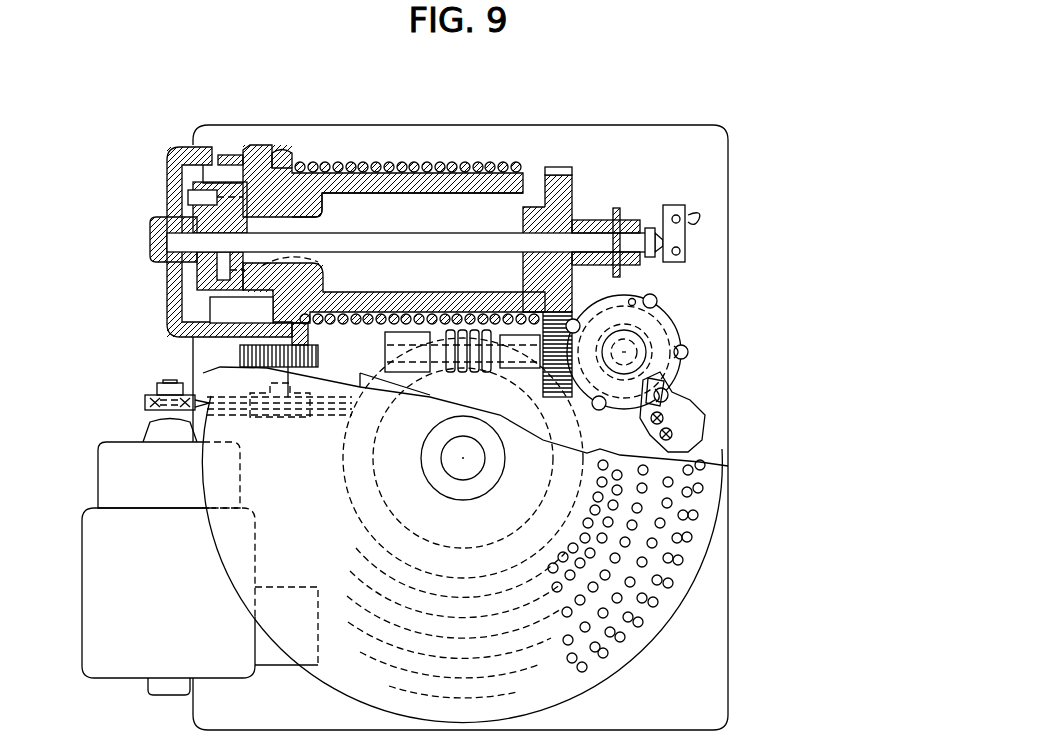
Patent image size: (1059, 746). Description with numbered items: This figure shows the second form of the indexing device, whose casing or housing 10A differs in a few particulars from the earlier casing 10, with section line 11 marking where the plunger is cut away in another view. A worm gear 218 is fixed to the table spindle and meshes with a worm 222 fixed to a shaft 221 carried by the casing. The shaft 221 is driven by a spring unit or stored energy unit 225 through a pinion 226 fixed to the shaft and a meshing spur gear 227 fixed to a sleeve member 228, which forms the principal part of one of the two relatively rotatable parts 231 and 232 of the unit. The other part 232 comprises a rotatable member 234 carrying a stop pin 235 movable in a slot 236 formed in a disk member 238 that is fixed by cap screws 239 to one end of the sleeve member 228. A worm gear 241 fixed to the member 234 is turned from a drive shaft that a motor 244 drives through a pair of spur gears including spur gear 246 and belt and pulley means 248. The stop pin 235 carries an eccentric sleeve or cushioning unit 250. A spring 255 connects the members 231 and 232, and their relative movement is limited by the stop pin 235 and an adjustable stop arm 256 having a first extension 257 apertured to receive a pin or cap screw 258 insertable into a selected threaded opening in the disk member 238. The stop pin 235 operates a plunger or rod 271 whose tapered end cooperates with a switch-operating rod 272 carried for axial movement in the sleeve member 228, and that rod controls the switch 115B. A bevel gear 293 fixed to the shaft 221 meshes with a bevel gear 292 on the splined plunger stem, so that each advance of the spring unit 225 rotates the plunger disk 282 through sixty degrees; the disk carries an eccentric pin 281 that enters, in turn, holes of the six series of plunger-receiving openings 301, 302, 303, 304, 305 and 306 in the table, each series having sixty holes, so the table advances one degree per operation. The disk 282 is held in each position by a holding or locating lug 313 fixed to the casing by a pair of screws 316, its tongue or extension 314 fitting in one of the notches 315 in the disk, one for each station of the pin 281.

The casing or housing 10 is at (96, 110).
The casing or housing 10A is at (516, 124).
The section line 11- 11 is at (630, 98).
The switch 115B is at (677, 206).
The worm gear 218 is at (443, 388).
The shaft 221 is at (398, 337).
The worm 222 is at (461, 331).
The spring unit or stored energy unit 225 is at (384, 162).
The pinion 226 is at (553, 394).
The spur gear 227 is at (562, 167).
The sleeve member 228 is at (428, 196).
The relatively rotatable part 231 is at (582, 181).
The relatively rotatable part 232 is at (251, 145).
The rotatable member 234 is at (196, 148).
The stop pin 235 is at (222, 313).
The slot 236 is at (222, 161).
The disk member 238 is at (240, 213).
The cap screws 239 is at (268, 266).
The worm gear 241 is at (288, 150).
The motor 244 is at (92, 599).
The spur gear 246 is at (318, 357).
The belt and pulley means 248 is at (144, 406).
The eccentric sleeve or cushioning unit 250 is at (209, 305).
The spring 255 is at (405, 168).
The adjustable stop arm 256 is at (194, 276).
The first extension 257 is at (196, 215).
The pin or cap screw 258 is at (188, 197).
The plunger or rod 271 is at (222, 259).
The switch-operating rod 272 is at (440, 245).
The pin 281 is at (636, 300).
The disk 282 is at (673, 394).
The bevel gear 292 is at (661, 323).
The bevel gear 293 is at (622, 287).
The plunger-receiving openings 301 is at (548, 569).
The plunger-receiving openings 302 is at (552, 588).
The plunger-receiving openings 303 is at (566, 644).
The plunger-receiving openings 304 is at (585, 671).
The plunger-receiving openings 305 is at (571, 663).
The plunger-receiving openings 306 is at (562, 613).
The holding or locating lug 313 is at (667, 436).
The tongue or extension 314 is at (661, 377).
The notches 315 is at (678, 352).
The screws 316 is at (562, 428).